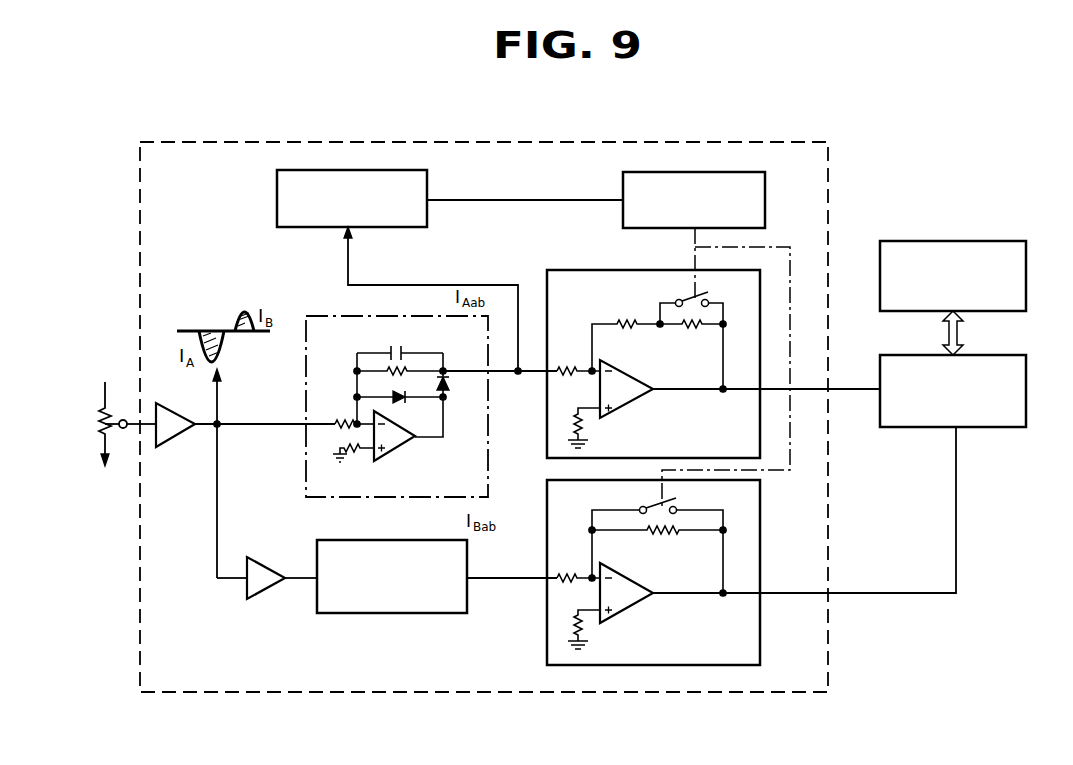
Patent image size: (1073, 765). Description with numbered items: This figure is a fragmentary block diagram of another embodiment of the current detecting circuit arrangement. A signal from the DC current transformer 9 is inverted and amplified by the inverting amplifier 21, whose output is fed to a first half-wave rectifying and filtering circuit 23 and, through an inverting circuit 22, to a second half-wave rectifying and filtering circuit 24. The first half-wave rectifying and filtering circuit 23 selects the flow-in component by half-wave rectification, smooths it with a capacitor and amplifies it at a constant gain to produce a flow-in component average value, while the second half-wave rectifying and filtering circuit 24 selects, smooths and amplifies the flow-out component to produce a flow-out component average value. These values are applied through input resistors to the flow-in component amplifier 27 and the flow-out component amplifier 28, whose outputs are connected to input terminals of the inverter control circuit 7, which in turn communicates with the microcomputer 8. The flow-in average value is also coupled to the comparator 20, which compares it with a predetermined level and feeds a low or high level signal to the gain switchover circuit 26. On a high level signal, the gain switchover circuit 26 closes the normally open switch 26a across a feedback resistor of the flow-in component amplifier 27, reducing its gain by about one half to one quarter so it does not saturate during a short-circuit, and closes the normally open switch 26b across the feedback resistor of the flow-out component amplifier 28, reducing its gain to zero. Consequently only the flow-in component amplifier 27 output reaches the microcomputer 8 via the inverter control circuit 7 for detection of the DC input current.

The inverter control circuit 7 is at (1026, 400).
The microcomputer 8 is at (1026, 262).
The DC current transformer 9 is at (111, 414).
The comparator 20 is at (277, 228).
The inverting amplifier 21 is at (183, 446).
The inverting circuit 22 is at (270, 561).
The first half-wave rectifying and filtering circuit 23 is at (305, 397).
The second half-wave rectifying and filtering circuit 24 is at (413, 540).
The gain switchover circuit 26 is at (765, 200).
The normally open switch 26a is at (688, 298).
The normally open switch 26b is at (650, 507).
The flow-in component amplifier 27 is at (713, 345).
The flow-out component amplifier 28 is at (751, 546).